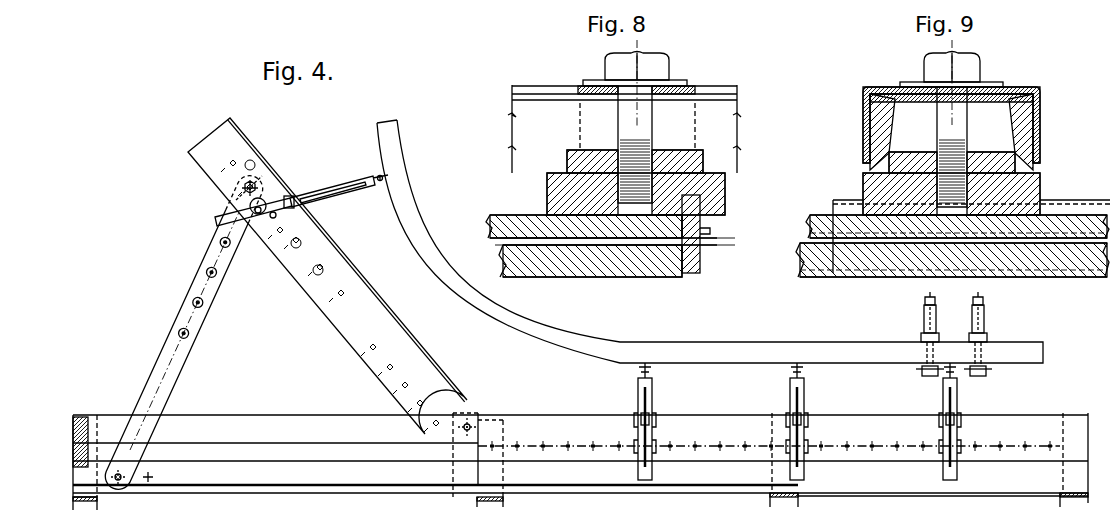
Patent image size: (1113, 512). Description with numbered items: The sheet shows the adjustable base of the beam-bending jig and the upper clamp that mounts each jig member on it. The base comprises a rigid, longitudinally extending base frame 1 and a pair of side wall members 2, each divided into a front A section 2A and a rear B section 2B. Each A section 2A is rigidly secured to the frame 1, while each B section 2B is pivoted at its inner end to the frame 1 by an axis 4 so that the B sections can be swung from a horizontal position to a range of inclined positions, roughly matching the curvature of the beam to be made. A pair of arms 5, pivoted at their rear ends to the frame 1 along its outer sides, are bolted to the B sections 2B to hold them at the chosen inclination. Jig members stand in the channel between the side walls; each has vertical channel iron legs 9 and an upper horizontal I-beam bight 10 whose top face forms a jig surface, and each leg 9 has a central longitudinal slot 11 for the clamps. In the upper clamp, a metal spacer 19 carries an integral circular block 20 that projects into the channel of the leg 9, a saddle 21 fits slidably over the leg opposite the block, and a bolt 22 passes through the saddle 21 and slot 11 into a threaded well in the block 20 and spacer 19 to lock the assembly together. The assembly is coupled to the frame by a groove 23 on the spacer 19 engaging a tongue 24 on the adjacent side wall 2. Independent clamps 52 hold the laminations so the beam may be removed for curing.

In FIG. 4, the base frame 1 is at (190, 478).
In FIG. 4, the front A section of side wall member 2A is at (795, 429).
In FIG. 4, the rear B section of side wall member 2B is at (327, 310).
In FIG. 4, the axis 4 is at (469, 422).
In FIG. 4, the arm 5 is at (185, 355).
In FIG. 4, the channel iron leg 9 is at (652, 388).
In FIG. 9, the channel iron leg 9 is at (1010, 115).
In FIG. 4, the upper horizontal bight 10 is at (801, 370).
In FIG. 4, the longitudinal slot 11 is at (790, 389).
In FIG. 4, the independent clamp 52 is at (972, 319).
In FIG. 8, the bolt 22 is at (669, 63).
In FIG. 9, the bolt 22 is at (980, 63).
In FIG. 8, the groove 23 is at (725, 180).
In FIG. 8, the tongue 24 is at (700, 206).
In FIG. 8, the side wall member 2 is at (600, 262).
In FIG. 9, the side wall member 2 is at (1037, 267).
In FIG. 9, the saddle 21 is at (1040, 127).
In FIG. 9, the circular block 20 is at (1003, 157).
In FIG. 9, the spacer 19 is at (1040, 181).